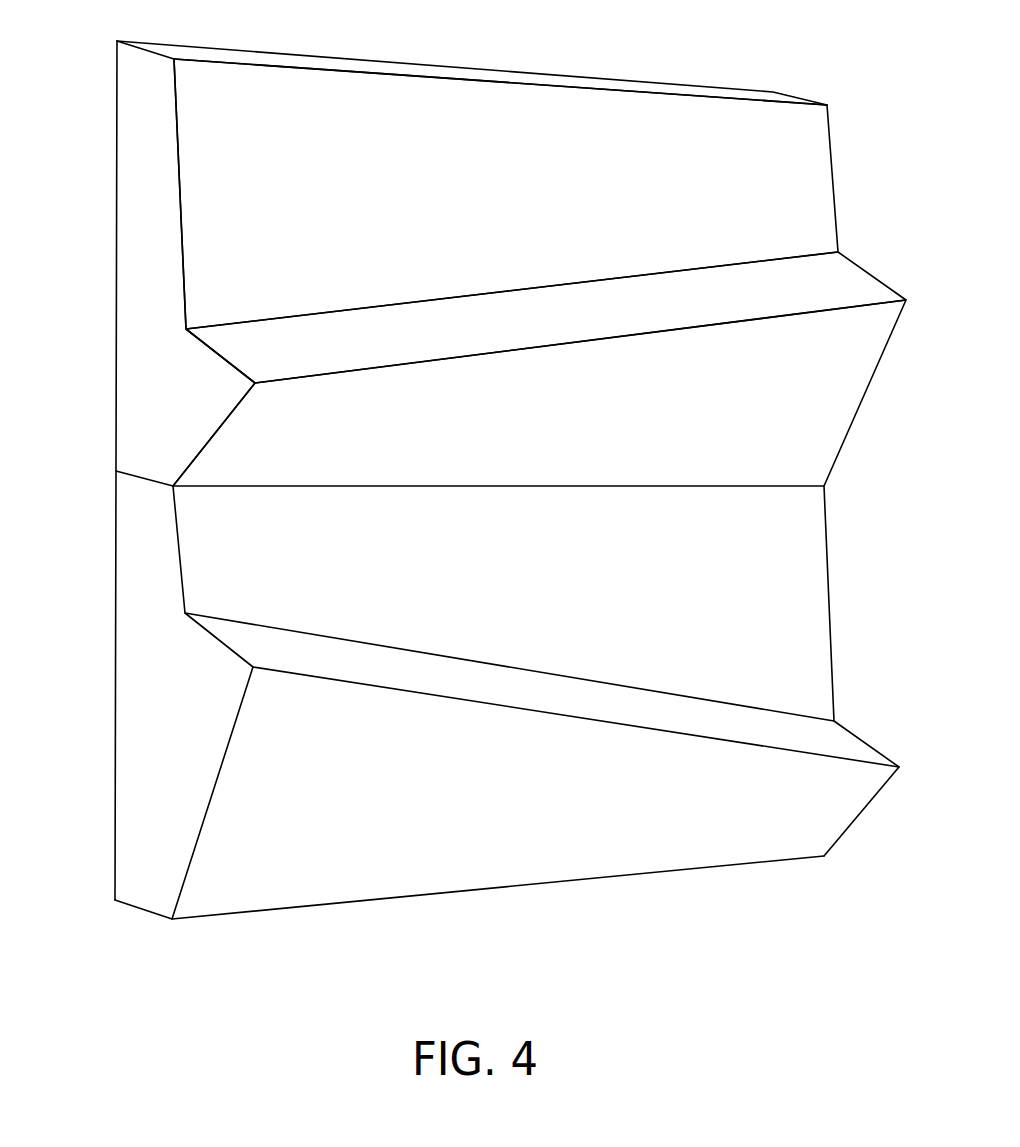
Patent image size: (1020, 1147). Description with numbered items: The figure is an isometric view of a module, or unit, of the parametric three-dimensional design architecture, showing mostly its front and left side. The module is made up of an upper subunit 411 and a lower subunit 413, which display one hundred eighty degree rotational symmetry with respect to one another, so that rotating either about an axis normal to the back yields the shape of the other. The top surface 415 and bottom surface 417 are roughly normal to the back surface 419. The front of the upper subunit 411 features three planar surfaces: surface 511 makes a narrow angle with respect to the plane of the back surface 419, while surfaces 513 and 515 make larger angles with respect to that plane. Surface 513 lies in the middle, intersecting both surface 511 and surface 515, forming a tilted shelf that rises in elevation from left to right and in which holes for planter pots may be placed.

The upper subunit 411 is at (140, 170).
The lower subunit 413 is at (147, 601).
The top surface 415 is at (770, 94).
The bottom surface 417 is at (142, 910).
The back surface 419 is at (117, 393).
The surface 511 is at (392, 208).
The surface 513 is at (388, 346).
The surface 515 is at (518, 436).